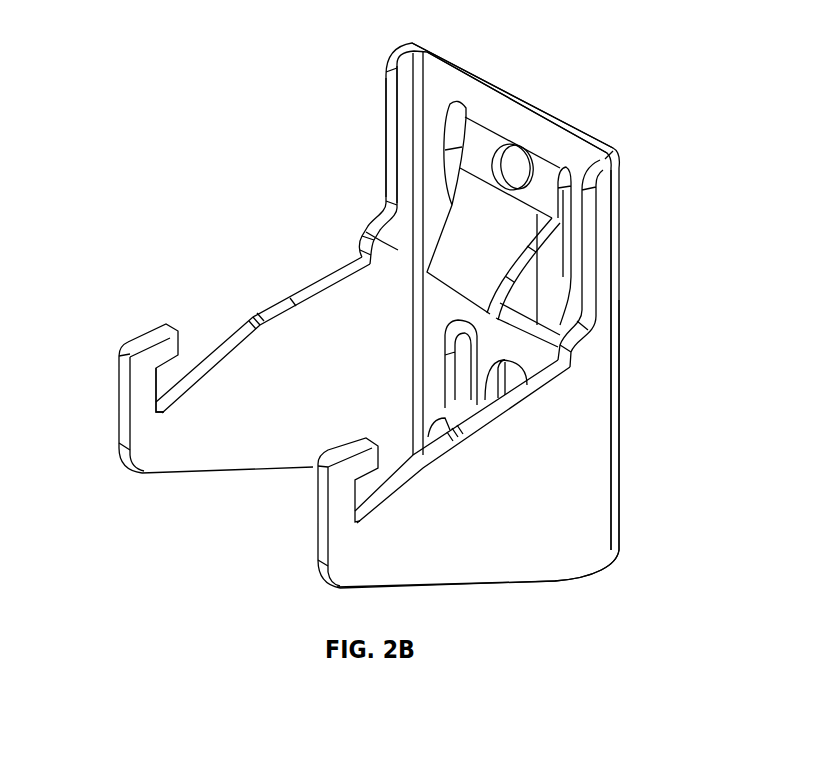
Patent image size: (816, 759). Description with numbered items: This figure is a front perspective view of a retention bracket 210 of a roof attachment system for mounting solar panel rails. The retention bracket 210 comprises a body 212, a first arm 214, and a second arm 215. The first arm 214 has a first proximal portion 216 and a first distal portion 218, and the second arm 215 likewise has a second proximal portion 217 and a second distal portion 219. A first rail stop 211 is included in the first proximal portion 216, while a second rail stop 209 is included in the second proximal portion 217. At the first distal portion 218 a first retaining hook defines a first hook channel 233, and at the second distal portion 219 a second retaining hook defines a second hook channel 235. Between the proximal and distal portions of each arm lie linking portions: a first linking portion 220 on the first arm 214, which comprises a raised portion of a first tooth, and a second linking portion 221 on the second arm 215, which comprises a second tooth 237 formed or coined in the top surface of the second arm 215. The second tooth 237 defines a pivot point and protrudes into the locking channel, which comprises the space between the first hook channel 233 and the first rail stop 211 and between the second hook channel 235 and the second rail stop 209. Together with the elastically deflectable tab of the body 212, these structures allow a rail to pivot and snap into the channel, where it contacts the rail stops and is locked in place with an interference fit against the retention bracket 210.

The retention bracket 210 is at (536, 58).
The first rail stop 211 is at (593, 402).
The body 212 is at (598, 138).
The first arm 214 is at (618, 551).
The second arm 215 is at (208, 347).
The first proximal portion 216 is at (585, 480).
The second proximal portion 217 is at (360, 225).
The first distal portion 218 is at (315, 553).
The second distal portion 219 is at (118, 403).
The first linking portion 220 is at (517, 553).
The second linking portion 221 is at (307, 437).
The first hook channel 233 is at (357, 489).
The second hook channel 235 is at (160, 380).
The second tooth 237 is at (263, 303).
The second rail stop 209 is at (384, 204).